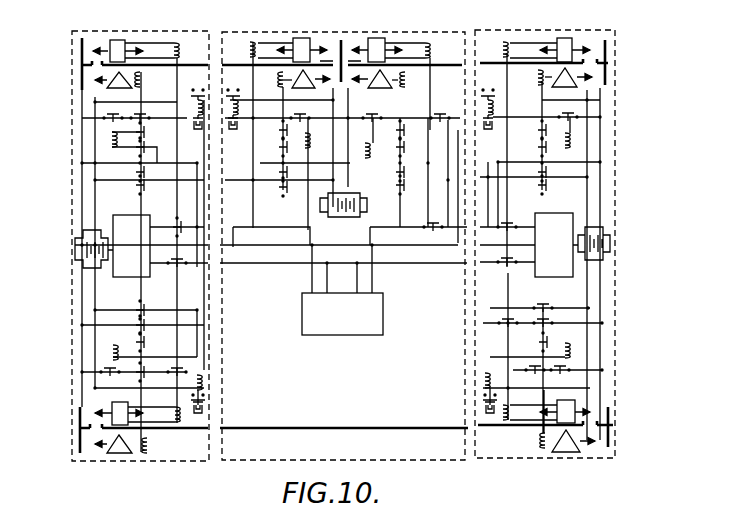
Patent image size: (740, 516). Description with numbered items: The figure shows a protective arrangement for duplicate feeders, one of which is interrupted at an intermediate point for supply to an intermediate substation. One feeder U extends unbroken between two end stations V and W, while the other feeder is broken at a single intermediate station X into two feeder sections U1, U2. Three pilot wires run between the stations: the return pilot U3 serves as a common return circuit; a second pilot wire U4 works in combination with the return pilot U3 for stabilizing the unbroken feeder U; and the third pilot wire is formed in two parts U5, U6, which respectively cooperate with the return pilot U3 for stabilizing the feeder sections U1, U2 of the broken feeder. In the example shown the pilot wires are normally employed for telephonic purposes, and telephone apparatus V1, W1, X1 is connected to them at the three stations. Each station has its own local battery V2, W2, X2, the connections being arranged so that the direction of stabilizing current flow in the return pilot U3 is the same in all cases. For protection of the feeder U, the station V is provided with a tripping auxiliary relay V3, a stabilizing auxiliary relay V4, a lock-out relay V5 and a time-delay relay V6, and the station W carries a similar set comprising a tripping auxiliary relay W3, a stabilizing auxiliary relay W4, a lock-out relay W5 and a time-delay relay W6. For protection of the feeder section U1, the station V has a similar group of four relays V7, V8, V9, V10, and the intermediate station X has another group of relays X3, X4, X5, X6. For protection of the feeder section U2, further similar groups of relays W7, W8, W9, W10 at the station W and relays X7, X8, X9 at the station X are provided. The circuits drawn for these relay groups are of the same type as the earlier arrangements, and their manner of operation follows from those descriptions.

The station V is at (206, 32).
The telephone apparatus V1 is at (131, 246).
The local battery V2 is at (78, 252).
The tripping auxiliary relay V3 is at (181, 422).
The stabilizing auxiliary relay V4 is at (141, 452).
The lock-out relay V5 is at (113, 351).
The time-delay relay V6 is at (205, 381).
The relay V7 is at (177, 43).
The relay V8 is at (141, 72).
The relay V9 is at (112, 140).
The relay V10 is at (195, 104).
The station W is at (502, 32).
The telephone apparatus W1 is at (554, 245).
The local battery W2 is at (612, 245).
The tripping auxiliary relay W3 is at (505, 422).
The stabilizing auxiliary relay W4 is at (544, 448).
The lock-out relay W5 is at (575, 351).
The time-delay relay W6 is at (485, 386).
The relay W7 is at (508, 42).
The relay W8 is at (541, 70).
The relay W9 is at (568, 148).
The relay W10 is at (493, 107).
The intermediate station X is at (354, 32).
The telephone apparatus X1 is at (342, 314).
The local battery X2 is at (345, 212).
The relay X3 is at (253, 42).
The relay X4 is at (278, 72).
The relay X5 is at (309, 147).
The relay X6 is at (236, 129).
The relay X7 is at (430, 43).
The relay X8 is at (400, 72).
The relay X9 is at (370, 158).
The feeder U is at (375, 427).
The feeder section U1 is at (233, 63).
The feeder section U2 is at (448, 63).
The return pilot U3 is at (250, 266).
The pilot wire U4 is at (400, 266).
The pilot wire part U5 is at (283, 227).
The pilot wire part U6 is at (414, 228).